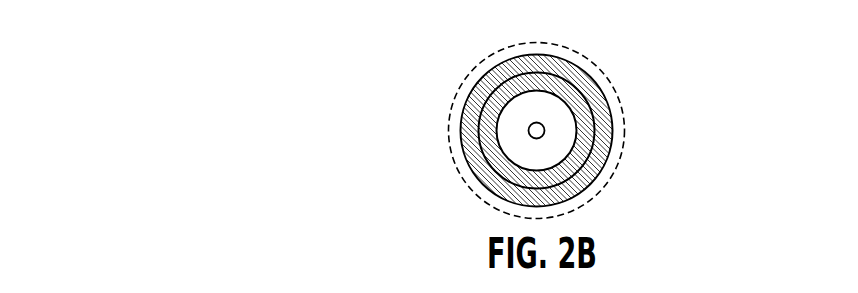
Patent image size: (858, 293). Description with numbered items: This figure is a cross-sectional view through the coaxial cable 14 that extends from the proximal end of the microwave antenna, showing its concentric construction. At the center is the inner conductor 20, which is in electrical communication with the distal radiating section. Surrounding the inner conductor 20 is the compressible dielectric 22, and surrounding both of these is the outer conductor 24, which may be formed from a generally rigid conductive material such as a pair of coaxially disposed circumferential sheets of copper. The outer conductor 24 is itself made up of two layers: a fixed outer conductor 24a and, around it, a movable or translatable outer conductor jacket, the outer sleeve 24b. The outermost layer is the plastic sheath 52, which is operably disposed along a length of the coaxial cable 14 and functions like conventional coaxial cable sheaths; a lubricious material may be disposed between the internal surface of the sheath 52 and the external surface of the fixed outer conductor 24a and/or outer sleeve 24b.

The coaxial cable 14 is at (613, 146).
The inner conductor 20 is at (528, 130).
The compressible dielectric 22 is at (552, 135).
The outer conductor 24 is at (535, 146).
The fixed outer conductor 24a is at (495, 110).
The outer sleeve 24b is at (580, 80).
The sheath 52 is at (622, 128).